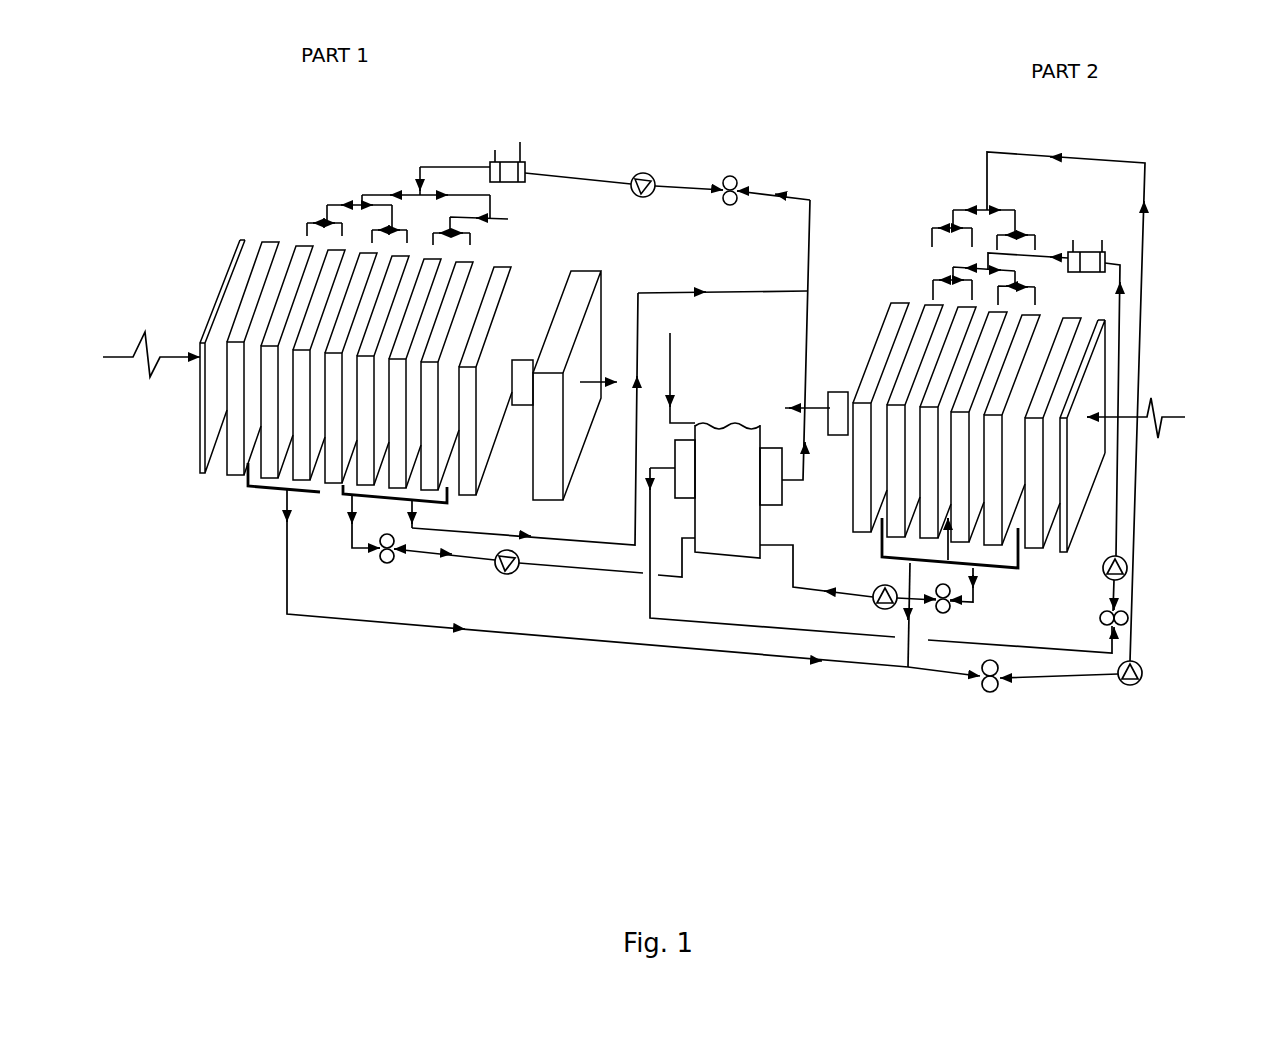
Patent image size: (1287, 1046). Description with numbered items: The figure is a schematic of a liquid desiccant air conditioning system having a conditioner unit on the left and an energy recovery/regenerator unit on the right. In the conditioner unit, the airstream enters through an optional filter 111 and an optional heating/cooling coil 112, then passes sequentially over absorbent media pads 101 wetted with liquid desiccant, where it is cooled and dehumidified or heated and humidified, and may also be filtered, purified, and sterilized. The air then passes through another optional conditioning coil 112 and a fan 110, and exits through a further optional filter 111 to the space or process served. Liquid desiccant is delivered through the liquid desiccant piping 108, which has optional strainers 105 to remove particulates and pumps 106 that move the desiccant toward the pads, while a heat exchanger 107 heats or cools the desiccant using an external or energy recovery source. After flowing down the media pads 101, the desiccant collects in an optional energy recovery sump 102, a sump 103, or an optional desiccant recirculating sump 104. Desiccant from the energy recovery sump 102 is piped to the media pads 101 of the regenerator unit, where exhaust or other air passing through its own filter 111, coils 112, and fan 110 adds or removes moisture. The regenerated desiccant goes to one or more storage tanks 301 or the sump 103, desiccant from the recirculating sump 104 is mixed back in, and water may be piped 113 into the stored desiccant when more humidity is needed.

The absorbent media pad 101 is at (297, 243).
The energy recovery sump 102 is at (255, 490).
The sump 103 is at (335, 495).
The desiccant recirculating sump 104 is at (428, 503).
The strainer 105 is at (730, 176).
The pump 106 is at (645, 172).
The heat exchanger 107 is at (488, 165).
The liquid desiccant piping 108 is at (415, 167).
The fan 110 is at (523, 358).
The filter 111 is at (222, 287).
The heating/cooling coil 112 is at (262, 240).
The water pipe 113 is at (670, 357).
The storage tank 301 is at (722, 557).